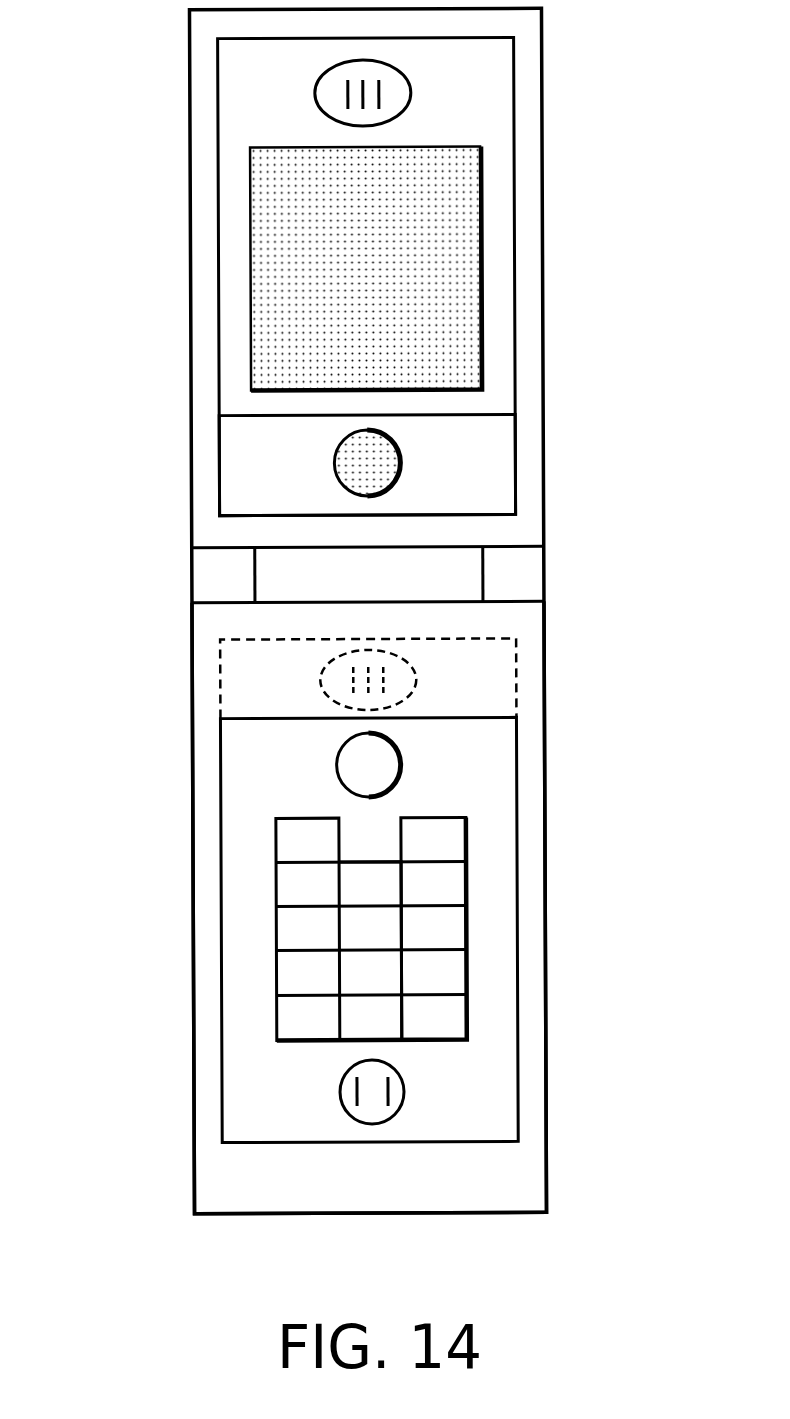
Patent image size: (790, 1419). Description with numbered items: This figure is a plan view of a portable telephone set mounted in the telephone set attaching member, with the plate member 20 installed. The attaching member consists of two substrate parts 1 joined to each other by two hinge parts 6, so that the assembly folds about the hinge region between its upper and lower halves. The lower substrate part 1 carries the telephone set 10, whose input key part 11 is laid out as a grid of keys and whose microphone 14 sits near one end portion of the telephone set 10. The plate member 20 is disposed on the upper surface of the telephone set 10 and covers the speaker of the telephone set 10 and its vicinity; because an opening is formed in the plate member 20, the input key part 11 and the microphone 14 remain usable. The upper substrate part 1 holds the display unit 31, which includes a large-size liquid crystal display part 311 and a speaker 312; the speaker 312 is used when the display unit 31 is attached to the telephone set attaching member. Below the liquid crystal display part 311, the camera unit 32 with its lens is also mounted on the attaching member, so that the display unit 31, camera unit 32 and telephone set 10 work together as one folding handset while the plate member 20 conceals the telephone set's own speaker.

The substrate part 1 is at (190, 108).
The telephone set 10 is at (212, 783).
The plate member 20 is at (503, 772).
The input key part 11 is at (467, 878).
The microphone 14 is at (402, 1092).
The hinge part 6 is at (547, 545).
The display unit 31 is at (515, 166).
The liquid crystal display part 311 is at (415, 282).
The speaker 312 is at (413, 90).
The camera unit 32 is at (515, 437).